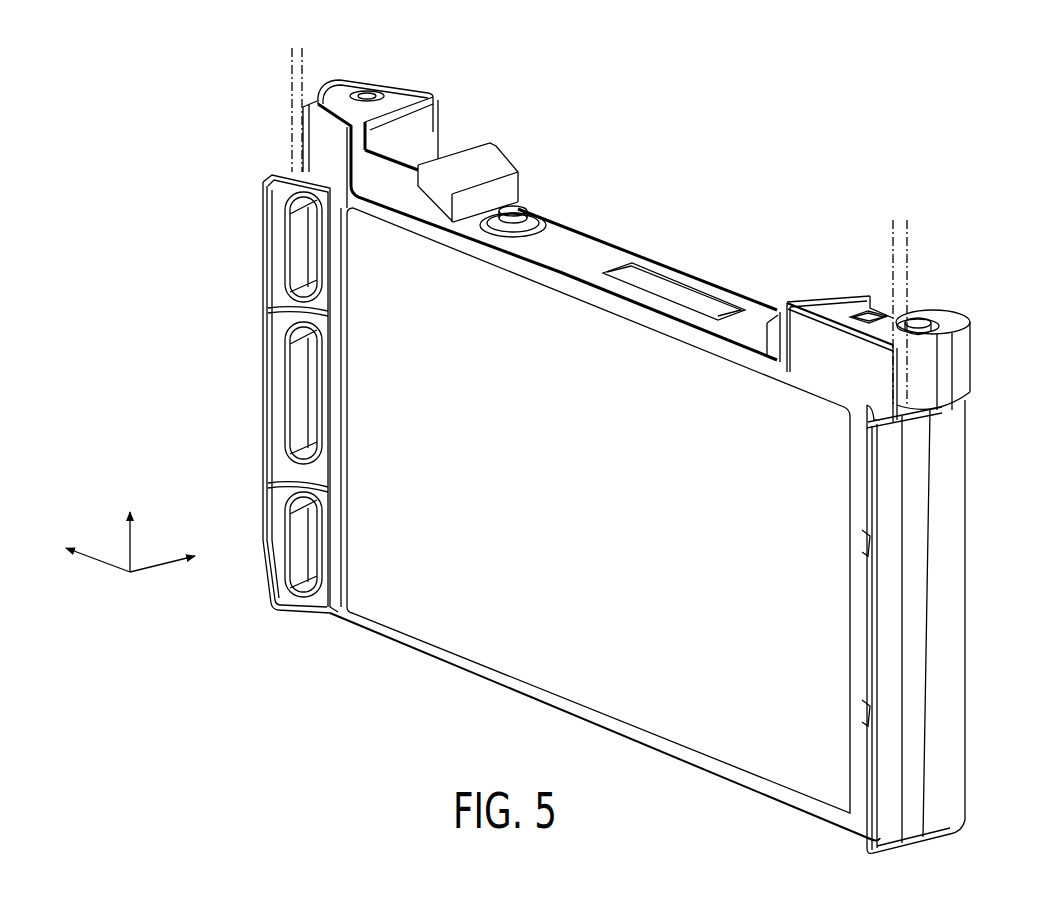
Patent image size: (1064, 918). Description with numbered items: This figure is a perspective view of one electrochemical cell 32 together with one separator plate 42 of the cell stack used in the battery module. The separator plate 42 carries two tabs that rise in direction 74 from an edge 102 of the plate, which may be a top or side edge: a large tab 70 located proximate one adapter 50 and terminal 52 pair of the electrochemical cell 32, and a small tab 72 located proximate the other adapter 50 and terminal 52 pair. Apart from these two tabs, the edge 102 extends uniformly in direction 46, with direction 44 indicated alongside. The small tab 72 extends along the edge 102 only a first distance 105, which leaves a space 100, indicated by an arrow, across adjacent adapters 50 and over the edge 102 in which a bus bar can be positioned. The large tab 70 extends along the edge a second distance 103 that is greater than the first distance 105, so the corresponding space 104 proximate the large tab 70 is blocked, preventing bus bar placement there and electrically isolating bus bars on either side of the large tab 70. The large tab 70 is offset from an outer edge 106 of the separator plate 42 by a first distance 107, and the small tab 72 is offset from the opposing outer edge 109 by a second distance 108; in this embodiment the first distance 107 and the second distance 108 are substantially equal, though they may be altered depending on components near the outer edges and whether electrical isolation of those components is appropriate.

The electrochemical cell 32 is at (590, 250).
The separator plate 42 is at (545, 278).
The lateral direction 44 is at (156, 566).
The direction 46 is at (108, 565).
The adapter 50 is at (400, 103).
The terminal 52 is at (367, 92).
The large tab 70 is at (803, 333).
The small tab 72 is at (318, 132).
The direction 74 is at (133, 546).
The space 100 is at (382, 178).
The edge 102 is at (436, 136).
The second distance 103 is at (891, 384).
The space 104 is at (803, 366).
The first distance 105 is at (349, 155).
The outer edge 106 is at (917, 563).
The first distance 107 is at (942, 232).
The second distance 108 is at (338, 67).
The opposing outer edge 109 is at (263, 264).